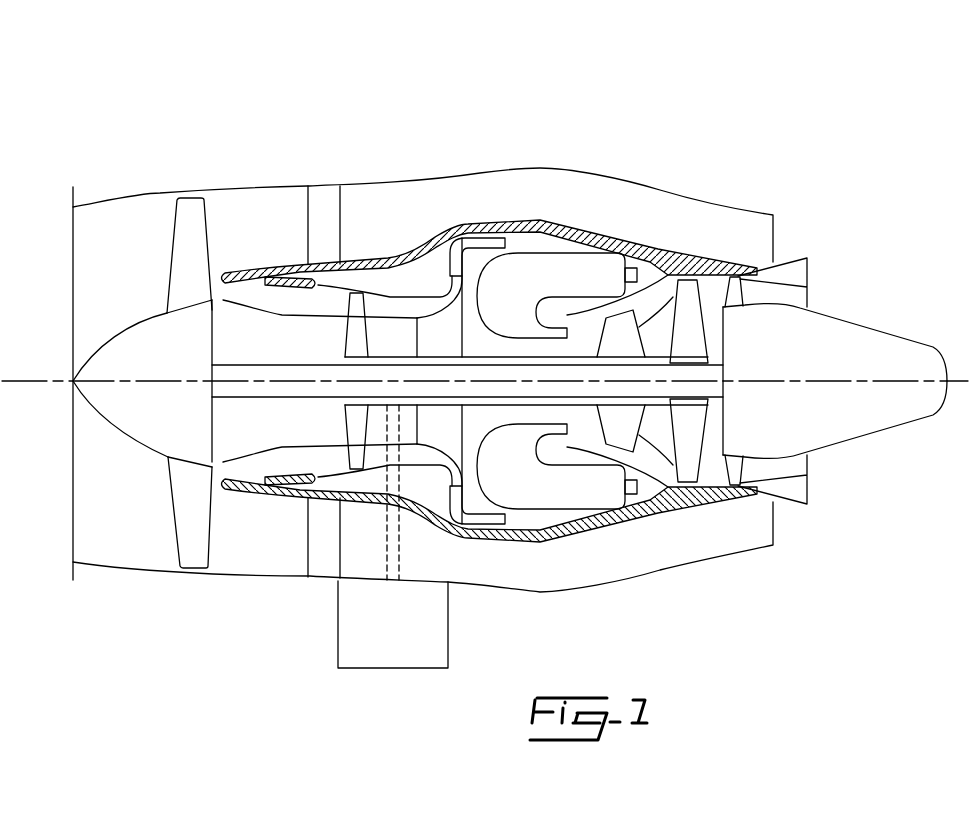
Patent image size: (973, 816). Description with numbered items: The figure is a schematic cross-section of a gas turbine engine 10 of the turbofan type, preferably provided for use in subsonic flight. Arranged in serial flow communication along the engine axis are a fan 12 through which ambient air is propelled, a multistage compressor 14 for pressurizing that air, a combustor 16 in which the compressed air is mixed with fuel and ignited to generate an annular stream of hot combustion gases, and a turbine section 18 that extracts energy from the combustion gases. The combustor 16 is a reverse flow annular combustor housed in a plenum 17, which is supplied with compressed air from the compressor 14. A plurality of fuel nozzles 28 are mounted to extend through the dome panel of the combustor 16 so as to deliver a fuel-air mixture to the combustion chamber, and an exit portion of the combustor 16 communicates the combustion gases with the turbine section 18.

The gas turbine engine 10 is at (675, 128).
The fan 12 is at (193, 500).
The multistage compressor 14 is at (402, 312).
The combustor 16 is at (548, 270).
The plenum 17 is at (577, 245).
The turbine section 18 is at (657, 432).
The fuel nozzles 28 is at (634, 268).